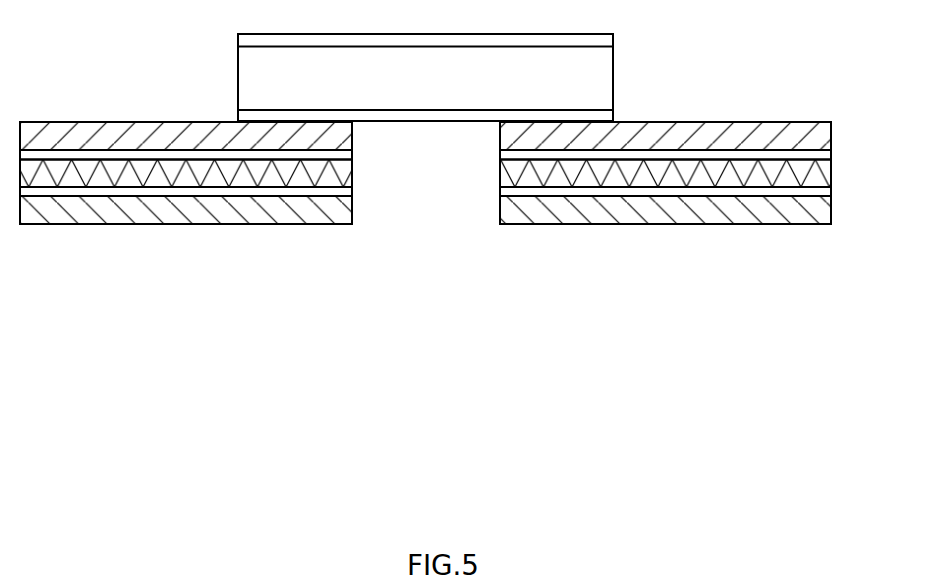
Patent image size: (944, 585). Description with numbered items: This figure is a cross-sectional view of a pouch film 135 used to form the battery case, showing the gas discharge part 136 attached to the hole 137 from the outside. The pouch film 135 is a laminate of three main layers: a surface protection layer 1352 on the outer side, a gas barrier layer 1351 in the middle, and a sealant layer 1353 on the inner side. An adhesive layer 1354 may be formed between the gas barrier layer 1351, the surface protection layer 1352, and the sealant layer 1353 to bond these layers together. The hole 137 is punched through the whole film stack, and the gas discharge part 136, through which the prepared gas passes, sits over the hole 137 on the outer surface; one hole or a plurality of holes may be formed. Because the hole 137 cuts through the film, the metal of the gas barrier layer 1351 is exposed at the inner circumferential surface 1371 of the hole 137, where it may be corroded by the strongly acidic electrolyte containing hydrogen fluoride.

The pouch film 135 is at (535, 222).
The gas discharge part 136 is at (614, 35).
The hole 137 is at (420, 179).
The inner circumferential surface 1371 is at (352, 173).
The gas barrier layer 1351 is at (832, 172).
The surface protection layer 1352 is at (832, 133).
The sealant layer 1353 is at (832, 209).
The adhesive layer 1354 is at (758, 192).